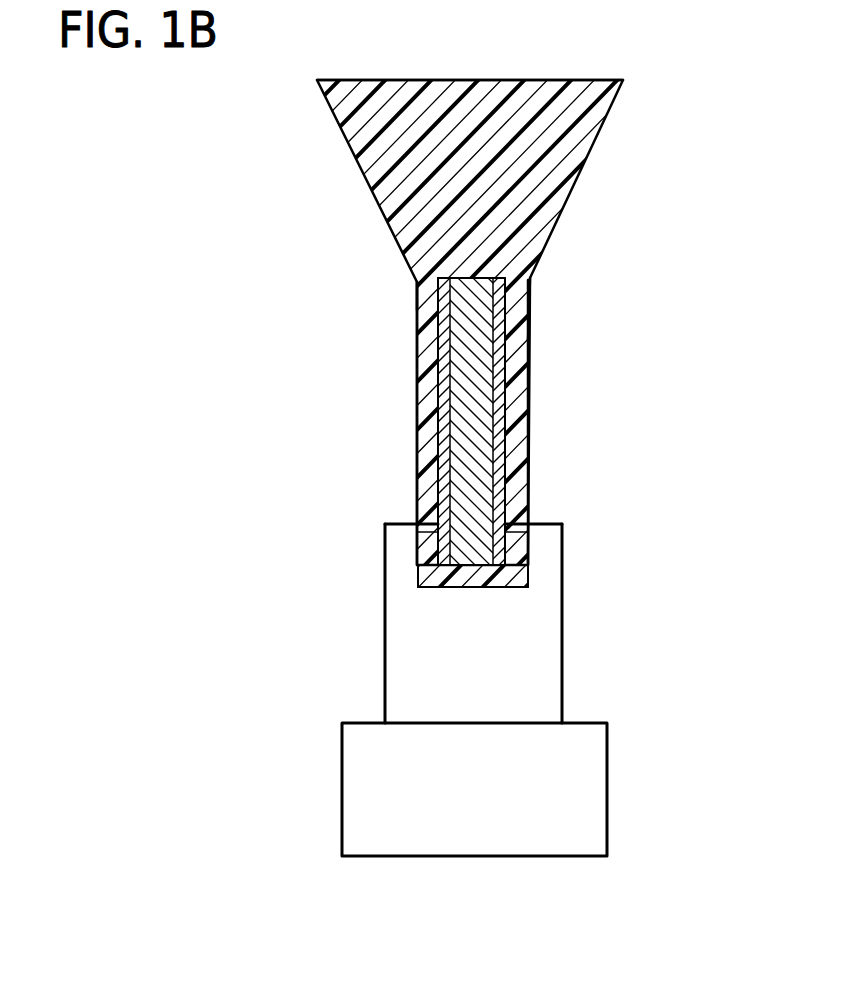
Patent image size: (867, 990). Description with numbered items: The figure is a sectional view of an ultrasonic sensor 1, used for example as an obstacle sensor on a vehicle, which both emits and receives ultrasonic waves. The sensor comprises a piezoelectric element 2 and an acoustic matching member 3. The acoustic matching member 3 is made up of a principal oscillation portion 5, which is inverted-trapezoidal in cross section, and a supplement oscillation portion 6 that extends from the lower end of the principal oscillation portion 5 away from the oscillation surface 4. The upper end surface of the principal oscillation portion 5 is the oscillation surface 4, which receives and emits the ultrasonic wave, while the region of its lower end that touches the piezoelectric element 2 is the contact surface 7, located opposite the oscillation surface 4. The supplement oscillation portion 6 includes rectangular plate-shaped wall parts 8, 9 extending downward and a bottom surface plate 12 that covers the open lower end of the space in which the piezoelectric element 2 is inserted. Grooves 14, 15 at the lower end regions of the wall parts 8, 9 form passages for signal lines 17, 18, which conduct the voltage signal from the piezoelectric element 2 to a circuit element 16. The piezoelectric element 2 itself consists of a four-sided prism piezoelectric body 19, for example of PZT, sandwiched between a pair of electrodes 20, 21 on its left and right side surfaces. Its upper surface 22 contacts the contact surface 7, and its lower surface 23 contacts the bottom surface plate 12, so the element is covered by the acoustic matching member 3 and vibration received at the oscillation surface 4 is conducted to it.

The ultrasonic sensor 1 is at (433, 428).
The piezoelectric element 2 is at (477, 426).
The acoustic matching member 3 is at (557, 216).
The oscillation surface 4 is at (350, 80).
The principal oscillation portion 5 is at (560, 153).
The supplement oscillation portion 6 is at (520, 315).
The contact surface 7 is at (417, 295).
The wall part 8 is at (417, 405).
The wall part 9 is at (517, 412).
The bottom surface plate 12 is at (530, 578).
The groove 14 is at (417, 526).
The groove 15 is at (527, 527).
The circuit element 16 is at (607, 775).
The signal line 17 is at (385, 631).
The signal line 18 is at (562, 628).
The piezoelectric body 19 is at (490, 445).
The electrode 20 is at (418, 476).
The electrode 21 is at (498, 464).
The upper surface 22 is at (478, 289).
The lower surface 23 is at (423, 580).